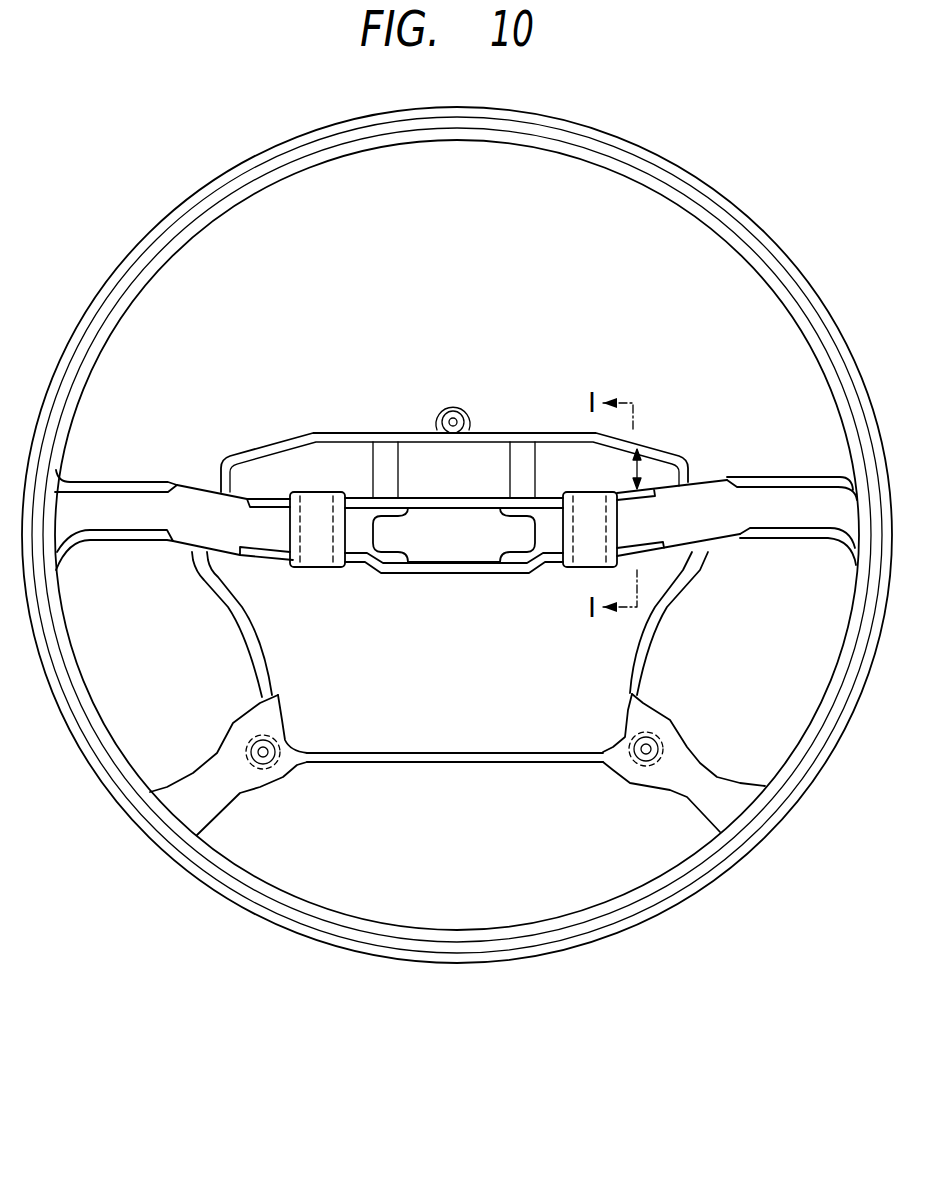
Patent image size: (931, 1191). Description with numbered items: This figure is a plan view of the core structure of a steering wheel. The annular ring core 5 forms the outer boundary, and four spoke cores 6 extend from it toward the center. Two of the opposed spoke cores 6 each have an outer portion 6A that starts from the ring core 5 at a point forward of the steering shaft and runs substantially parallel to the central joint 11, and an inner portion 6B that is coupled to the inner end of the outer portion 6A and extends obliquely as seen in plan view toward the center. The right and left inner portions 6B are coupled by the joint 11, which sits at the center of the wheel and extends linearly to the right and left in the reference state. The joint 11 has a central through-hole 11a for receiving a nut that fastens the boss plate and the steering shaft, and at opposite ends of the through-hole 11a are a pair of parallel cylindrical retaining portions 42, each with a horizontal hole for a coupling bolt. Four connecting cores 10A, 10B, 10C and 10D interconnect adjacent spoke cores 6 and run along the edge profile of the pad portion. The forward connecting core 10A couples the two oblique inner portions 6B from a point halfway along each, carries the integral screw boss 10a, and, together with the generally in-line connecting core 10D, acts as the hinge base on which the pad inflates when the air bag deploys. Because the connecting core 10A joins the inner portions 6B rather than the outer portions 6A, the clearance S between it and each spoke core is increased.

The ring core 5 is at (607, 136).
The spoke core 6 is at (222, 412).
The outer portion 6A is at (105, 507).
The inner portion 6B is at (227, 520).
The connecting core 10A is at (334, 431).
The screw boss 10a is at (455, 405).
The connecting core 10B is at (688, 600).
The connecting core 10C is at (242, 650).
The connecting core 10D is at (462, 764).
The joint 11 is at (368, 546).
The through-hole 11a is at (441, 559).
The retaining portion 42 is at (585, 488).
The clearance S is at (645, 469).